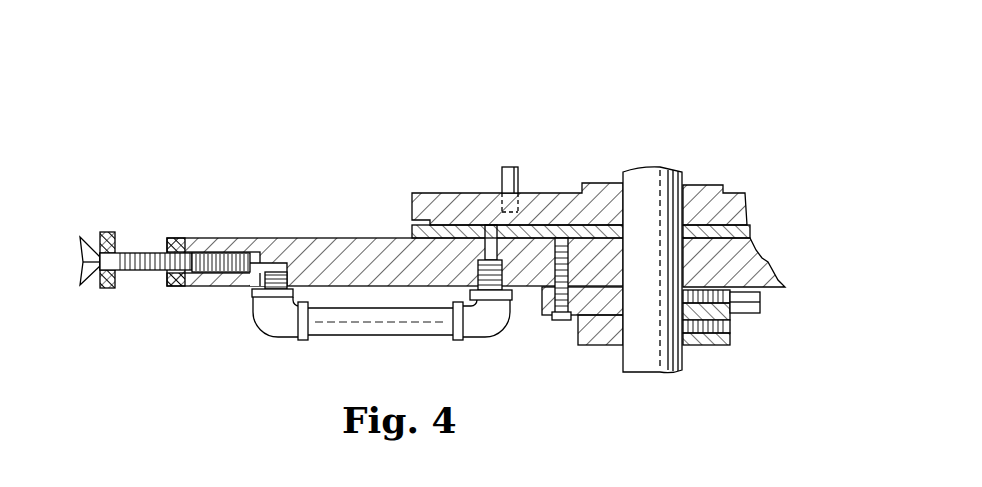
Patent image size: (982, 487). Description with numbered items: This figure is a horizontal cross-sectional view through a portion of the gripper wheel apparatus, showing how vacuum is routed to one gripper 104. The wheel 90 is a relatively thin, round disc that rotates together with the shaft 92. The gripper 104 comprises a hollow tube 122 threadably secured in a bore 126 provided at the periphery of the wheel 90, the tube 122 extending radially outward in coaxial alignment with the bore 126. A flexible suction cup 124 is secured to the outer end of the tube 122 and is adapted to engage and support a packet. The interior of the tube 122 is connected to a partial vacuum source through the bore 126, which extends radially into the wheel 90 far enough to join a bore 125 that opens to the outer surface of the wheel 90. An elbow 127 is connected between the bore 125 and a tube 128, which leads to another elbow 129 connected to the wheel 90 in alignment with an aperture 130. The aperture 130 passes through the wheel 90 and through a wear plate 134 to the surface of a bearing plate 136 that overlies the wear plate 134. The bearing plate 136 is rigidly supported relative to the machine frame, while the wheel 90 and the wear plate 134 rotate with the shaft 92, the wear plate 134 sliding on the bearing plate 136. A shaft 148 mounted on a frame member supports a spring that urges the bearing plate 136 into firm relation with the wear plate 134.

The wheel 90 is at (362, 240).
The shaft 92 is at (685, 352).
The gripper 104 is at (130, 240).
The hollow tube 122 is at (152, 275).
The flexible suction cup 124 is at (82, 272).
The bore 125 is at (262, 292).
The bore 126 is at (242, 255).
The elbow 127 is at (272, 328).
The tube 128 is at (388, 325).
The elbow 129 is at (498, 330).
The aperture 130 is at (482, 262).
The wear plate 134 is at (540, 225).
The bearing plate 136 is at (450, 195).
The shaft 148 is at (508, 178).